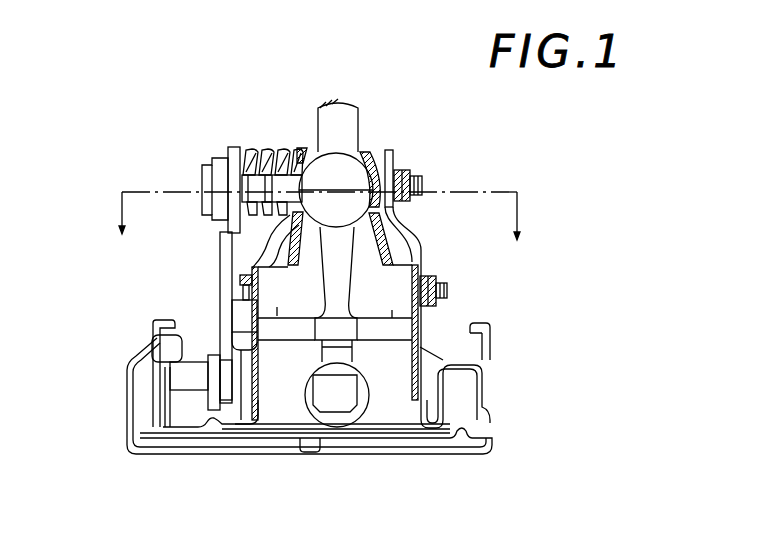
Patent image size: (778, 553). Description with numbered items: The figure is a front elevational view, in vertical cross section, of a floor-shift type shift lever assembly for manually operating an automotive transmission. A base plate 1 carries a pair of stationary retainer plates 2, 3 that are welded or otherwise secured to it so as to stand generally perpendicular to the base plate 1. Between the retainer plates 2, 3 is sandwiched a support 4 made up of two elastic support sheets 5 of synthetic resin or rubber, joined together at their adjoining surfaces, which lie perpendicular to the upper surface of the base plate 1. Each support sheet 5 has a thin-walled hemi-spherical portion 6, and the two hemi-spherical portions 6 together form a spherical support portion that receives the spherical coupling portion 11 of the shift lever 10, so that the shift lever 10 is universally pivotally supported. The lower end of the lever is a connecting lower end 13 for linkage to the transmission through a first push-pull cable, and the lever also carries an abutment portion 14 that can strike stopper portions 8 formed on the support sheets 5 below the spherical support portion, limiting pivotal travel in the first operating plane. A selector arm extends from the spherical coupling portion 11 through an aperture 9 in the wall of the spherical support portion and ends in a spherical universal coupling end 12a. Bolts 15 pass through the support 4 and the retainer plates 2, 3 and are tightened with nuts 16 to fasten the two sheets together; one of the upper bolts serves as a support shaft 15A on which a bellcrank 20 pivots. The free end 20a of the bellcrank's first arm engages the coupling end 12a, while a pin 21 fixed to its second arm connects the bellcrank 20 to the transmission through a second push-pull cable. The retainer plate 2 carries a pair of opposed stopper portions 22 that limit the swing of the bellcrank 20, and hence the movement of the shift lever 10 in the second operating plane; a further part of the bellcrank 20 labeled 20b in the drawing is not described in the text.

The base plate 1 is at (223, 453).
The retainer plate 2 is at (228, 245).
The retainer plate 3 is at (418, 250).
The support 4 is at (312, 293).
The support sheet 5 is at (278, 307).
The hemi-spherical portion 6 is at (303, 150).
The stopper portion 8 is at (358, 293).
The aperture 9 is at (270, 152).
The shift lever 10 is at (343, 117).
The spherical coupling portion 11 is at (358, 205).
The spherical universal coupling end 12a is at (248, 192).
The connecting lower end 13 is at (337, 400).
The abutment portion 14 is at (320, 328).
The bolt 15 is at (243, 285).
The support shaft 15A is at (422, 183).
The nut 16 is at (405, 168).
The bellcrank 20 is at (218, 290).
The free end 20a is at (233, 175).
The tab 20b is at (210, 426).
The pin 21 is at (188, 377).
The stopper portion 22 is at (241, 335).